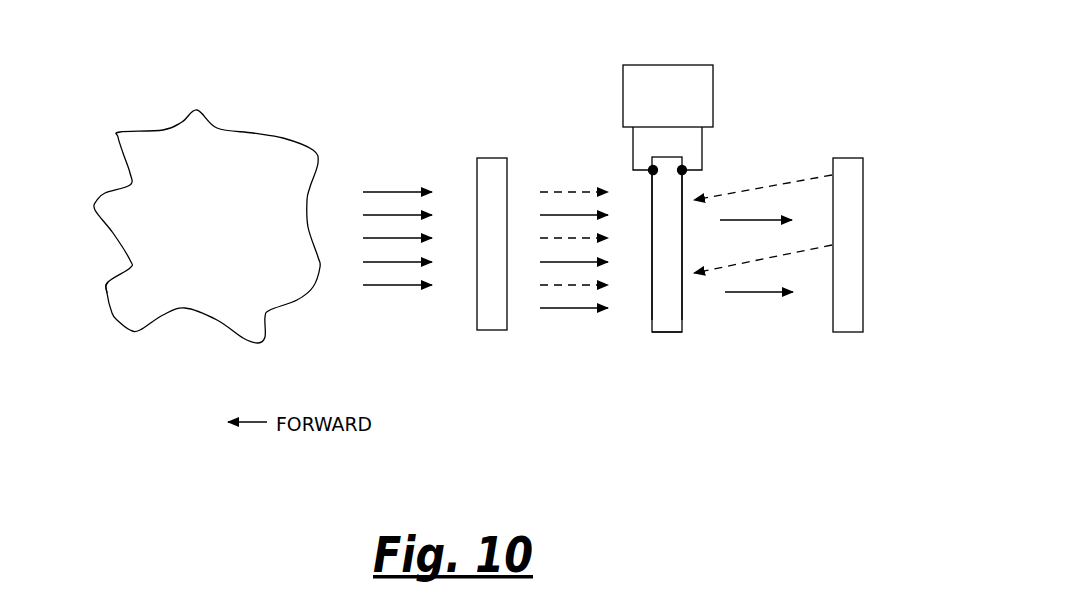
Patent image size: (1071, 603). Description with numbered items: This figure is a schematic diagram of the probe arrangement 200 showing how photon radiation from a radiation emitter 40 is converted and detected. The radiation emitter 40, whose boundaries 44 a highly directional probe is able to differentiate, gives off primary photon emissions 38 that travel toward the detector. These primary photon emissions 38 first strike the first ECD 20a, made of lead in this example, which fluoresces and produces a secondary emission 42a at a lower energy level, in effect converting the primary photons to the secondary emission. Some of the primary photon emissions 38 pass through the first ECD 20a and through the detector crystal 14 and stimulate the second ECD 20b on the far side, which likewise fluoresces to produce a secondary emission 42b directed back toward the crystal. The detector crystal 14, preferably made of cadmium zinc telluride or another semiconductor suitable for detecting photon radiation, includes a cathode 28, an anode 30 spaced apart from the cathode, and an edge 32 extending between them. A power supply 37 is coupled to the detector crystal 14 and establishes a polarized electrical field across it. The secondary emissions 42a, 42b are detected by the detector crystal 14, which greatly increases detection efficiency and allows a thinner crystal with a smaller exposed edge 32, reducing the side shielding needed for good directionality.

The detector crystal 14 is at (667, 279).
The first ECD 20a is at (490, 333).
The second ECD 20b is at (847, 333).
The cathode 28 is at (652, 312).
The anode 30 is at (684, 323).
The edge 32 is at (668, 333).
The power supply 37 is at (715, 80).
The primary photon emissions 38 is at (392, 192).
The radiation emitter 40 is at (224, 226).
The secondary emission 42a is at (557, 192).
The secondary emission 42b is at (760, 188).
The boundaries 44 is at (110, 312).
The ionization system 200 is at (786, 52).